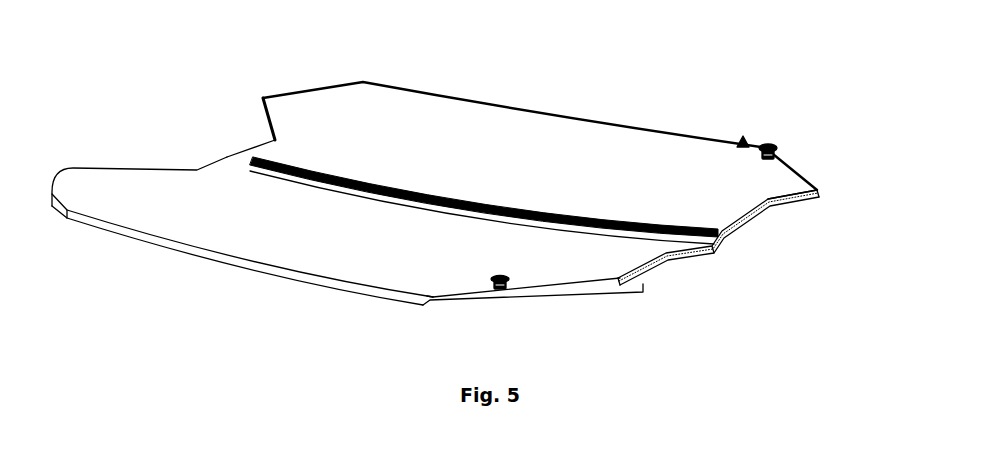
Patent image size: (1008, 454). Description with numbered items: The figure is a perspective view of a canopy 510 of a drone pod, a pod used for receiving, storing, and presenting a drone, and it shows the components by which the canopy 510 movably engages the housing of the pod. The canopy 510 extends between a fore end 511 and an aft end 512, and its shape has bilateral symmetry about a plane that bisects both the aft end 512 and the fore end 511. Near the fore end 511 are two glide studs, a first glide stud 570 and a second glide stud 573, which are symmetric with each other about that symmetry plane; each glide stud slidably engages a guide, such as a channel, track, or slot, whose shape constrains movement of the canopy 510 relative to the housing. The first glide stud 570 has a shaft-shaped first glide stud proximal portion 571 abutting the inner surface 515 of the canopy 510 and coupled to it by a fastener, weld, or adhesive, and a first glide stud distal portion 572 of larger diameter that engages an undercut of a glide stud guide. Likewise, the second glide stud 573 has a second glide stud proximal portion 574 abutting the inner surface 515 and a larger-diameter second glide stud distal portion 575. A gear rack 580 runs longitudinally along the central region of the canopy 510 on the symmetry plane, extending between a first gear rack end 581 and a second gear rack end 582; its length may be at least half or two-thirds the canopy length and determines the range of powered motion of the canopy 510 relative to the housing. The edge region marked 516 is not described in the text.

The canopy 510 is at (471, 186).
The fore end 511 is at (827, 262).
The aft end 512 is at (172, 110).
The inner surface 515 is at (451, 110).
The front edge of lower panel 516 is at (320, 300).
The first glide stud 570 is at (478, 258).
The first glide stud proximal portion 571 is at (492, 314).
The first glide stud distal portion 572 is at (490, 327).
The second glide stud 573 is at (738, 136).
The second glide stud proximal portion 574 is at (775, 150).
The second glide stud distal portion 575 is at (771, 146).
The gear rack 580 is at (598, 226).
The first gear rack end 581 is at (746, 240).
The second gear rack end 582 is at (247, 152).